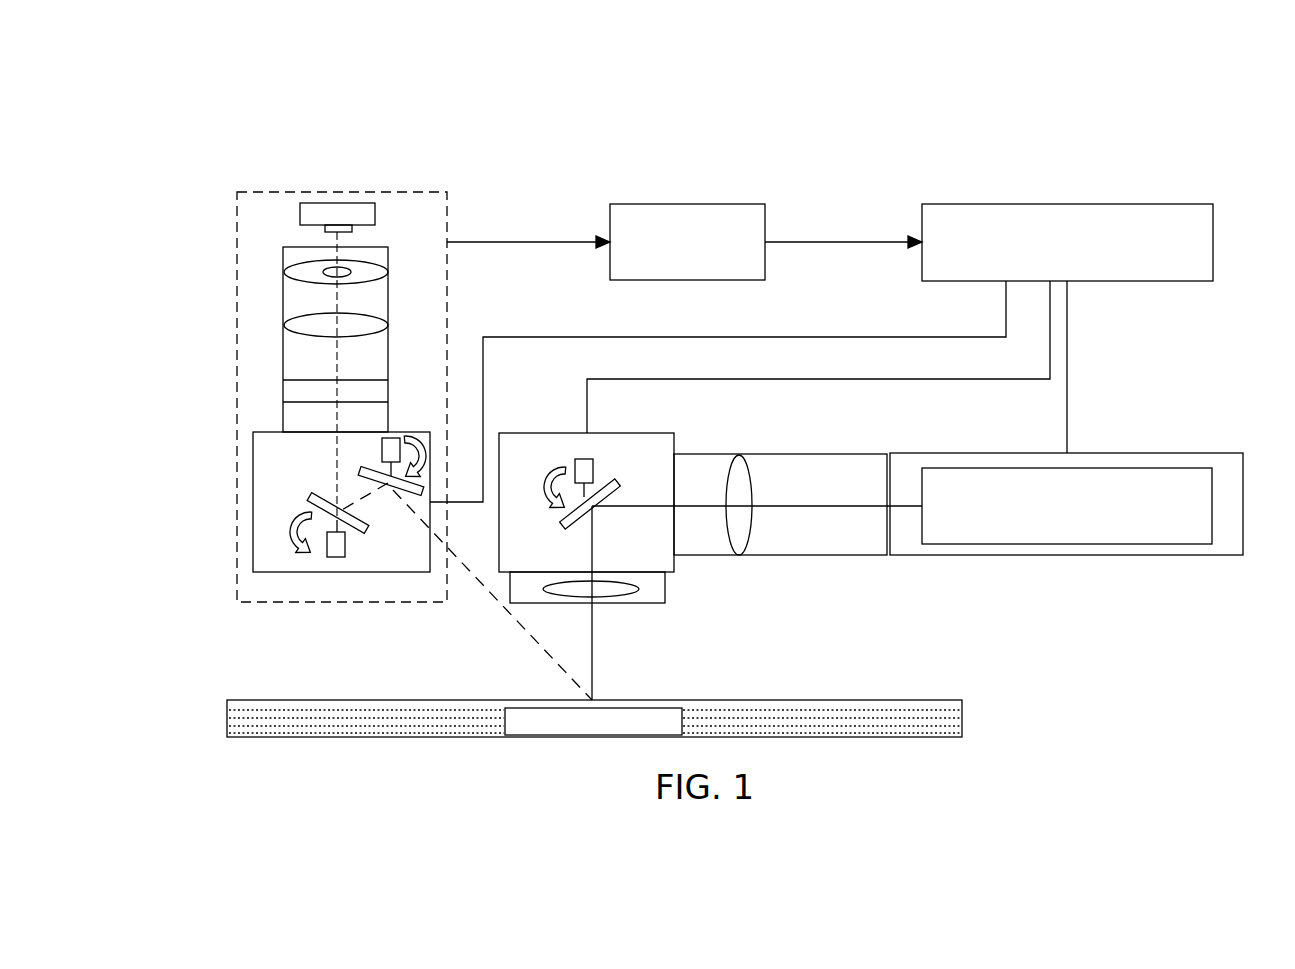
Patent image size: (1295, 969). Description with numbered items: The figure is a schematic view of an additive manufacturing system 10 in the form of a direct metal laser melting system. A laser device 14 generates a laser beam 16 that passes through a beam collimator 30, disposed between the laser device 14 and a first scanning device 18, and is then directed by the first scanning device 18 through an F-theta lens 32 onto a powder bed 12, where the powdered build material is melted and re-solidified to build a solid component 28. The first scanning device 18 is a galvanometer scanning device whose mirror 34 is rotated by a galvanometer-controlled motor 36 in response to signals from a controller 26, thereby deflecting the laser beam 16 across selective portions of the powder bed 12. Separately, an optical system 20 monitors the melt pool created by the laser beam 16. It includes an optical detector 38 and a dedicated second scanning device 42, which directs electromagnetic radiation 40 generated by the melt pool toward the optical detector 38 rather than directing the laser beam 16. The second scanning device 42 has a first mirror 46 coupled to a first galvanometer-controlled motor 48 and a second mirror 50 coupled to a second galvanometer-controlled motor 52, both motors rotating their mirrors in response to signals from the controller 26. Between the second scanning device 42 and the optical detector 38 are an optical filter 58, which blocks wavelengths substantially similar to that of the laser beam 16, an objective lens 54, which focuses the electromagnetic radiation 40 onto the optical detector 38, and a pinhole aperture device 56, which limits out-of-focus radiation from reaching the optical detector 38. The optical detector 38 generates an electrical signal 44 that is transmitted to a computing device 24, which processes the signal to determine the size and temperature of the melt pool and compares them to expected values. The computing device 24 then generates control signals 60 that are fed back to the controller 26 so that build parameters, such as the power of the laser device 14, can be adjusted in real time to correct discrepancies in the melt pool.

The additive manufacturing system 10 is at (280, 138).
The powder bed 12 is at (731, 700).
The laser device 14 is at (1127, 468).
The laser beam 16 is at (842, 512).
The first scanning device 18 is at (548, 433).
The optical system 20 is at (228, 219).
The computing device 24 is at (688, 204).
The controller 26 is at (1072, 204).
The solid component 28 is at (650, 700).
The beam collimator 30 is at (750, 538).
The F-theta lens 32 is at (628, 597).
The mirror 34 is at (616, 482).
The galvanometer-controlled motor 36 is at (586, 459).
The optical detector 38 is at (332, 203).
The electromagnetic radiation 40 is at (522, 627).
The second scanning device 42 is at (253, 455).
The electrical signal 44 is at (527, 242).
The first mirror 46 is at (424, 484).
The first galvanometer-controlled motor 48 is at (393, 436).
The second mirror 50 is at (300, 516).
The second galvanometer-controlled motor 52 is at (340, 557).
The objective lens 54 is at (283, 338).
The pinhole aperture device 56 is at (283, 285).
The optical filter 58 is at (283, 380).
The control signals 60 is at (832, 242).